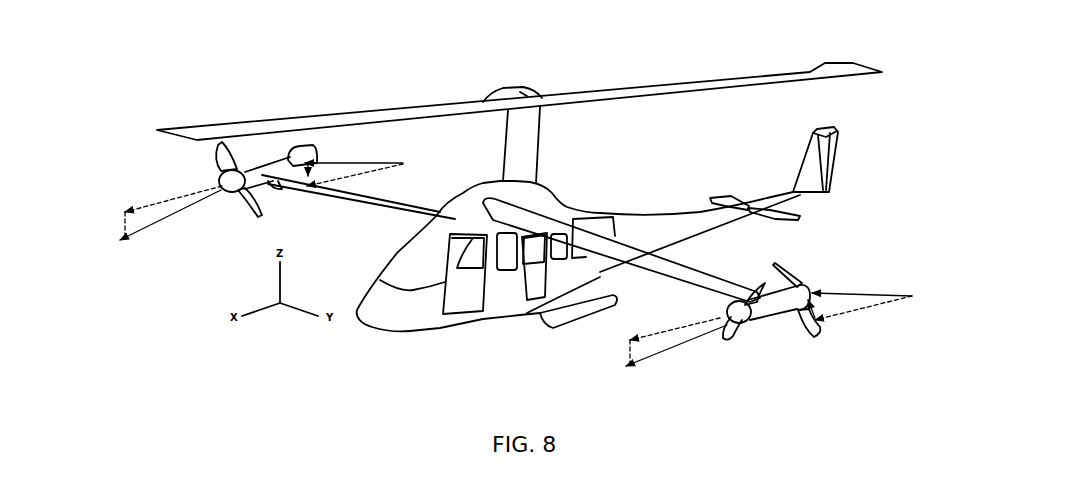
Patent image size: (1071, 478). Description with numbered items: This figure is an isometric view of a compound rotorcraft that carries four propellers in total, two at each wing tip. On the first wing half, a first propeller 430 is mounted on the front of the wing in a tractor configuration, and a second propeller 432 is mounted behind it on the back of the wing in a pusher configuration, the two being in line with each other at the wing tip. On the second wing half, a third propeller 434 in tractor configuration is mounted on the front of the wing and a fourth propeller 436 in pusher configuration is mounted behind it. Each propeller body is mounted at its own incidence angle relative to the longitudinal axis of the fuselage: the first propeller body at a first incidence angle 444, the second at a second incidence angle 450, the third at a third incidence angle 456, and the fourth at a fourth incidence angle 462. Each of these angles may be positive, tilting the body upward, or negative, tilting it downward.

The first propeller 430 is at (179, 174).
The second propeller 432 is at (351, 111).
The third propeller 434 is at (784, 330).
The fourth propeller 436 is at (840, 280).
The first incidence angle 444 is at (196, 221).
The second incidence angle 450 is at (402, 150).
The third incidence angle 456 is at (714, 364).
The fourth incidence angle 462 is at (897, 287).